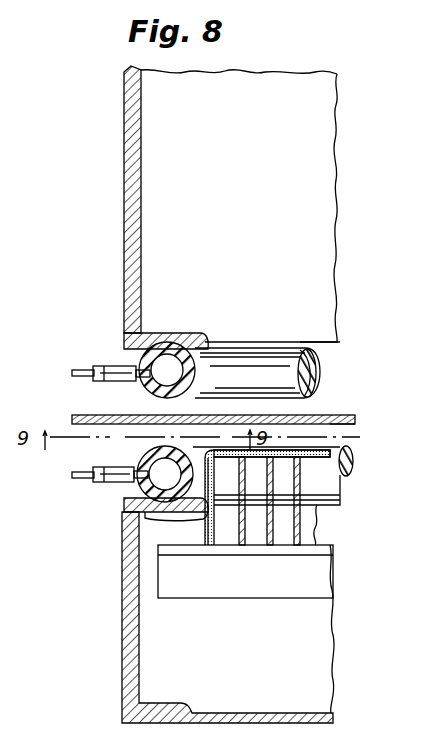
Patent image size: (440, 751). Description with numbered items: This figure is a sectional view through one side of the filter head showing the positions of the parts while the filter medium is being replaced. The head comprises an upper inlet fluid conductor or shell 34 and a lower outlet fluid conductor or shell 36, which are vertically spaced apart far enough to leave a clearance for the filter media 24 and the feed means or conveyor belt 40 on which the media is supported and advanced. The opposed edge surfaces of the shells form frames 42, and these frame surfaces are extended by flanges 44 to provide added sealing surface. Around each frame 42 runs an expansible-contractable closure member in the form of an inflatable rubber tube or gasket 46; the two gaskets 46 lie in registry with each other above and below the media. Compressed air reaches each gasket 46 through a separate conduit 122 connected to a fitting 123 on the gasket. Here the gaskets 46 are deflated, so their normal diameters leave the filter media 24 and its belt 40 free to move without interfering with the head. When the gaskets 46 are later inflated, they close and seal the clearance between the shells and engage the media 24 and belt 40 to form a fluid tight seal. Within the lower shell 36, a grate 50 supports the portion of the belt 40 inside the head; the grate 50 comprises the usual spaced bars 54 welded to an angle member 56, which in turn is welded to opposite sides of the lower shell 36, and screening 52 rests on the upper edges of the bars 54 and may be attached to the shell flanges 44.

The inlet fluid conductor or shell 34 is at (130, 229).
The outlet fluid conductor or shell 36 is at (124, 634).
The frame 42 is at (166, 422).
The flange 44 is at (180, 333).
The inflatable rubber tube (gasket) 46 is at (121, 347).
The conduit 122 is at (78, 370).
The fitting 123 is at (112, 366).
The filter media 24 is at (333, 415).
The feed means or conveyor belt 40 is at (342, 424).
The grate 50 is at (322, 523).
The screening 52 is at (306, 457).
The spaced bars 54 is at (242, 546).
The angle member 56 is at (280, 598).